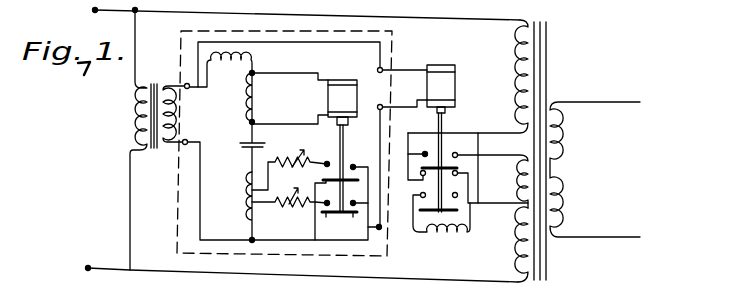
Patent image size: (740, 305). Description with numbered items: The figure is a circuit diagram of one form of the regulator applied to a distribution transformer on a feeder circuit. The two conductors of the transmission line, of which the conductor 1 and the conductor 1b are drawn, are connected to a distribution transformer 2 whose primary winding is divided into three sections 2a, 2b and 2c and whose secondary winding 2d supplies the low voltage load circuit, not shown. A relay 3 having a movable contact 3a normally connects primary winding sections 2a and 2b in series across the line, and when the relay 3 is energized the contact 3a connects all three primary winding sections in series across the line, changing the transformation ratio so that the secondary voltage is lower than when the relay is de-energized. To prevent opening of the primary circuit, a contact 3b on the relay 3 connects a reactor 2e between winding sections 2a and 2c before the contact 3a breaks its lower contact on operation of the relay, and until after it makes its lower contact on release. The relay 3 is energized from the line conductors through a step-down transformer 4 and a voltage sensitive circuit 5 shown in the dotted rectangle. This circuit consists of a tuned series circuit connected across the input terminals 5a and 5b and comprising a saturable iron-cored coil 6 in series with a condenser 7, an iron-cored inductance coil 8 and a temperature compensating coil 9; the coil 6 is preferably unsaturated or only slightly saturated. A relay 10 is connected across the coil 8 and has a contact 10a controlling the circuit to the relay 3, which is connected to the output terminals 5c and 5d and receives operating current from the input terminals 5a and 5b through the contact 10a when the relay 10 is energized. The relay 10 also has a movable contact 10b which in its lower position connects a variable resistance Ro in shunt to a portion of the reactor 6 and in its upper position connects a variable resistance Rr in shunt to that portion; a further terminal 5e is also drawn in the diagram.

The transmission line conductors 1 is at (114, 0).
The conductor of transmission line 1b is at (113, 262).
The distribution transformer 2 is at (548, 52).
The primary winding section 2a is at (520, 70).
The primary winding section 2b is at (515, 247).
The primary winding section 2c is at (516, 186).
The secondary winding 2d is at (560, 117).
The reactor 2e is at (445, 234).
The relay 3 is at (455, 78).
The movable contact 3a is at (449, 147).
The contact 3b is at (459, 210).
The step-down transformer 4 is at (133, 117).
The voltage sensitive circuit 5 is at (392, 43).
The input terminal 5a is at (185, 83).
The input terminal 5b is at (185, 145).
The output terminal 5c is at (380, 67).
The output terminal 5d is at (384, 101).
The terminal 5e is at (380, 229).
The saturable iron-cored coil 6 is at (245, 189).
The condenser 7 is at (240, 145).
The iron-cored inductance coil 8 is at (250, 96).
The temperature compensating coil 9 is at (225, 69).
The relay 10 is at (328, 97).
The contact 10a is at (334, 214).
The movable contact 10b is at (349, 168).
The variable resistance Rr is at (291, 163).
The variable resistance Ro is at (291, 211).